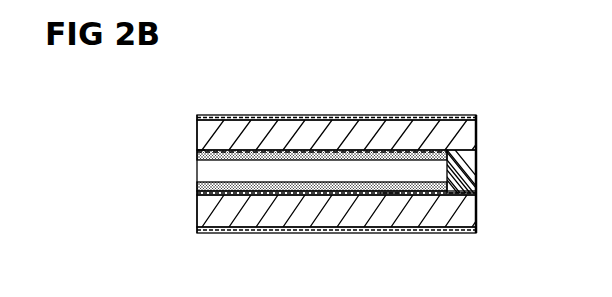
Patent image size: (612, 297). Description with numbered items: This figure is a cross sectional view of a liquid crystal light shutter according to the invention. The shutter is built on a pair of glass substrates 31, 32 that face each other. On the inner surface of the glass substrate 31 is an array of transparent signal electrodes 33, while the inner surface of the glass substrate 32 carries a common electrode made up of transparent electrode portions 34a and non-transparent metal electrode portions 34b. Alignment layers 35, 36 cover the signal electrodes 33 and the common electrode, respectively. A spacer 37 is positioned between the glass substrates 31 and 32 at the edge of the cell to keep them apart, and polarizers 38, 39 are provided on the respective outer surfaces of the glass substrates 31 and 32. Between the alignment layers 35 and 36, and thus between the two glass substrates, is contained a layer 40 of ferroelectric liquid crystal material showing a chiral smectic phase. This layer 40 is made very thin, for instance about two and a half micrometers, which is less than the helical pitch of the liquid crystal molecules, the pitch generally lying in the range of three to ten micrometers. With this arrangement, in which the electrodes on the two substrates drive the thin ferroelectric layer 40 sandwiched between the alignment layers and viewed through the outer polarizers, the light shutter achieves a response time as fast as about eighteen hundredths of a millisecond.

The glass substrate 31 is at (455, 128).
The glass substrate 32 is at (460, 212).
The transparent signal electrodes 33 is at (418, 150).
The transparent electrode portions 34a is at (358, 195).
The metal electrode portions 34b is at (393, 195).
The alignment layer 35 is at (197, 152).
The alignment layer 36 is at (197, 183).
The spacer 37 is at (465, 168).
The polarizer 38 is at (365, 115).
The polarizer 39 is at (465, 233).
The layer of ferroelectric liquid crystal material 40 is at (220, 192).